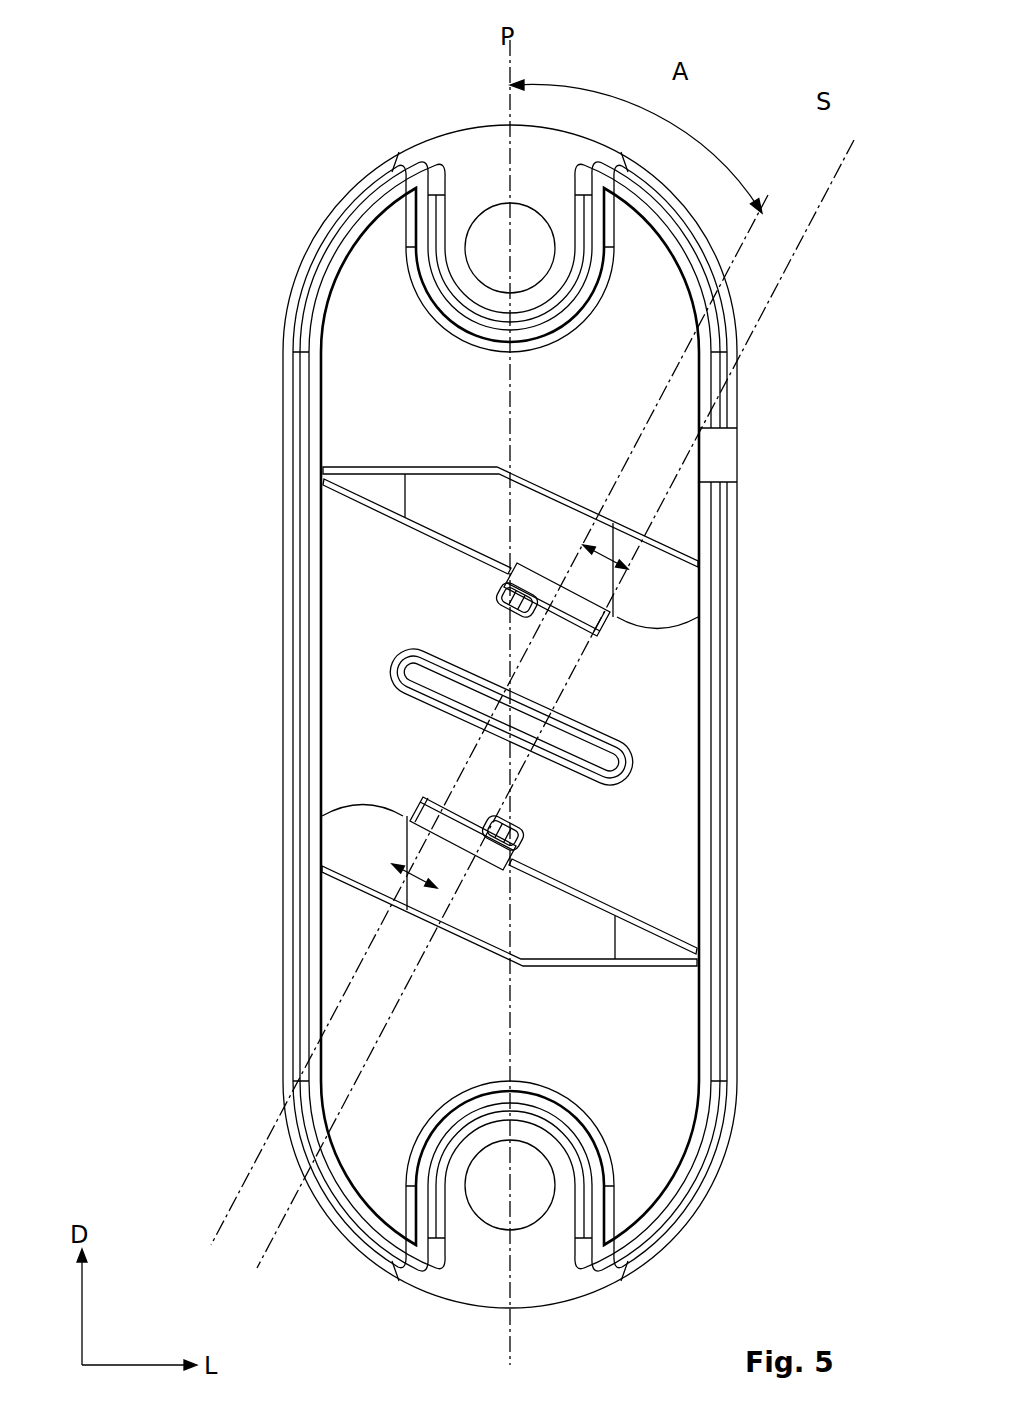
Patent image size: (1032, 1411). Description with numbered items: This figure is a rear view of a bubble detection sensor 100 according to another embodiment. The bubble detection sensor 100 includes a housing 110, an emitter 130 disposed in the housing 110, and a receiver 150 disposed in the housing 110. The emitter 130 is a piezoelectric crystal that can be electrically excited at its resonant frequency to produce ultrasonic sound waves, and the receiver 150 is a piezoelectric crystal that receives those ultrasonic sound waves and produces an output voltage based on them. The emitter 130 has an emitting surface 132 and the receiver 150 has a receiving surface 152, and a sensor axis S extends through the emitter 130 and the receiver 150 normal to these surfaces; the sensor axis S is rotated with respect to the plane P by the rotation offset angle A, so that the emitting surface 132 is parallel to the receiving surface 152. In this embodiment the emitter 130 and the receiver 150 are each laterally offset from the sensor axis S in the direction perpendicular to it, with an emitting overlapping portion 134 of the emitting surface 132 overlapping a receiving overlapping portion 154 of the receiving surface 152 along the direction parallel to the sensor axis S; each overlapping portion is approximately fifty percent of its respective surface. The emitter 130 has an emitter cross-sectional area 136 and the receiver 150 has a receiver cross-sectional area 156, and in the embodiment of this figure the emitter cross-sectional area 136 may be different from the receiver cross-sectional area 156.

The bubble detection sensor 100 is at (215, 42).
The housing 110 is at (283, 336).
The emitter 130 is at (530, 578).
The emitting surface 132 is at (500, 597).
The emitting overlapping portion 134 is at (613, 523).
The emitter cross-sectional area 136 is at (359, 522).
The receiver 150 is at (520, 858).
The receiving surface 152 is at (405, 810).
The receiving overlapping portion 154 is at (441, 865).
The receiver cross-sectional area 156 is at (680, 833).